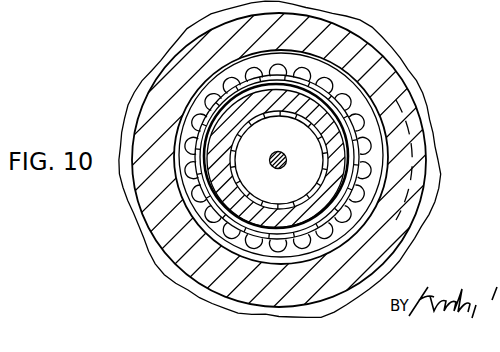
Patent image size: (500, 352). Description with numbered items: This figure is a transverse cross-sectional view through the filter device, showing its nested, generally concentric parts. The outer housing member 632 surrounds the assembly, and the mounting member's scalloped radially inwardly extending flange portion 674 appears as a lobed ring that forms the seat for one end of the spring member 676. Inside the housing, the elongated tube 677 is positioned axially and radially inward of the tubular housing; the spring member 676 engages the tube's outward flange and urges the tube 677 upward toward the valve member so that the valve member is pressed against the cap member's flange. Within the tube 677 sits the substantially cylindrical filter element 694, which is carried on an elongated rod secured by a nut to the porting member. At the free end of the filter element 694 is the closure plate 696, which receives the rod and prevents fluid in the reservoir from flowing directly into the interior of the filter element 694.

The scalloped radially inwardly extending flange portion 674 is at (360, 103).
The housing member 632 is at (403, 140).
The spring member 676 is at (340, 183).
The elongated tube 677 is at (345, 210).
The filter element 694 is at (213, 177).
The closure plate 696 is at (229, 222).